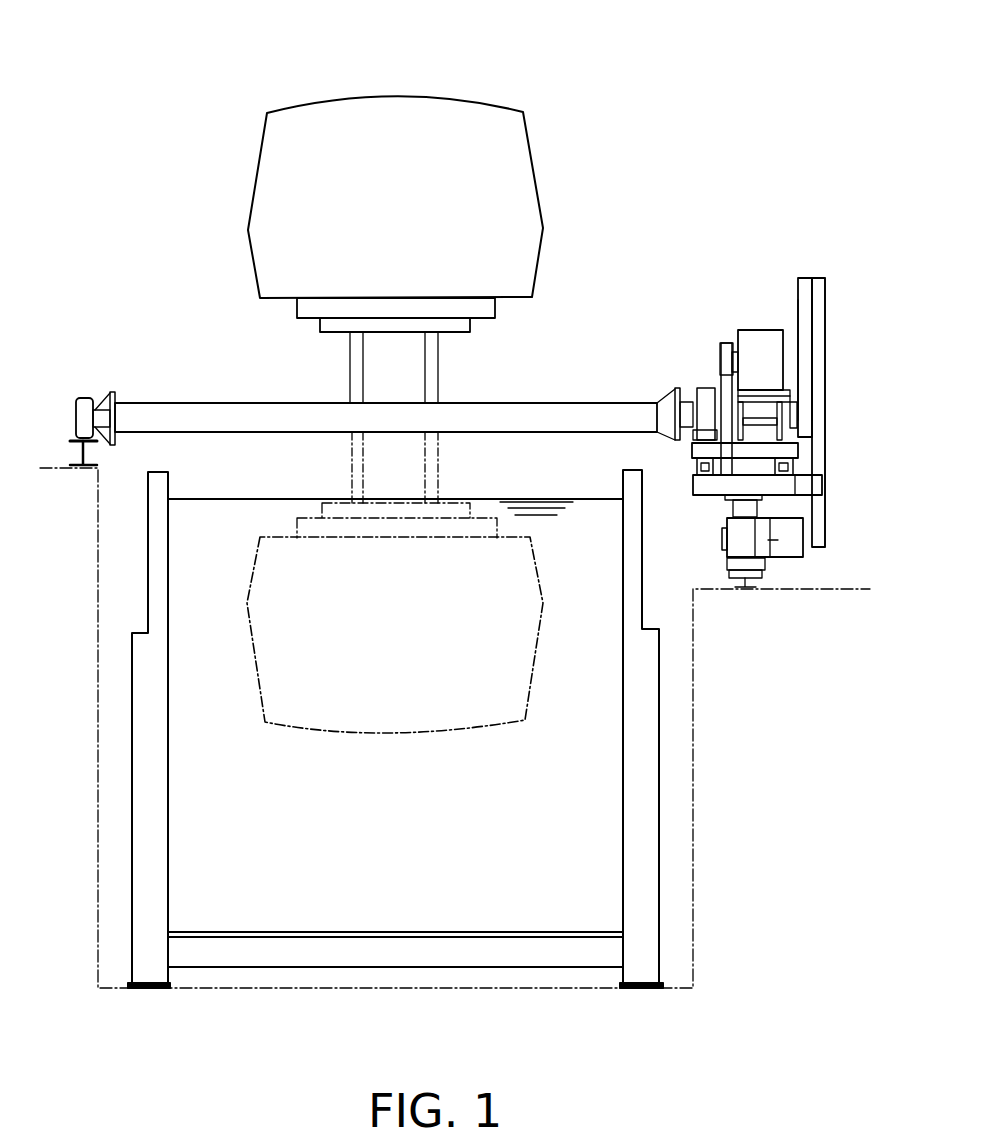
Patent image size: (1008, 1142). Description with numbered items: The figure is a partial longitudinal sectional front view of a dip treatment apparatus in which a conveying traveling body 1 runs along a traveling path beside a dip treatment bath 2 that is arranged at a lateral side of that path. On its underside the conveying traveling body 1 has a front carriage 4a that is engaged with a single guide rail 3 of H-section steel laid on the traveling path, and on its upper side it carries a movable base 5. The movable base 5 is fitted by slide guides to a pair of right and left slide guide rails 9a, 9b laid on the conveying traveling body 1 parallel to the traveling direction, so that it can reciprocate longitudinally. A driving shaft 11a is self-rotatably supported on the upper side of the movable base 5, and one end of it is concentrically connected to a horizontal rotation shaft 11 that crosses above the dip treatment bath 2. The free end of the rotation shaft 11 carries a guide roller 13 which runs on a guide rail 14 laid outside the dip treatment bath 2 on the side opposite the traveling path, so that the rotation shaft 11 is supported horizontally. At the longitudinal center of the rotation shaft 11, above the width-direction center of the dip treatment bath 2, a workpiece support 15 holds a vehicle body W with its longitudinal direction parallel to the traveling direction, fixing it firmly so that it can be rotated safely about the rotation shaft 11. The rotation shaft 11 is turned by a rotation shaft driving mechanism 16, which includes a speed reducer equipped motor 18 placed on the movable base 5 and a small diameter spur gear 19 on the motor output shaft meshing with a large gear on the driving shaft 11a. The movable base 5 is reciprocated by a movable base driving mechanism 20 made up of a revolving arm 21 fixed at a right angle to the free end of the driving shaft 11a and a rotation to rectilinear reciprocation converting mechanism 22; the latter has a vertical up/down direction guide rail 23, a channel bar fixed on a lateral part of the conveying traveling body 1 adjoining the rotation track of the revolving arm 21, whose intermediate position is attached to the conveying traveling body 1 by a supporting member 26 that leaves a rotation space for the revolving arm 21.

The vehicle body W is at (400, 113).
The conveying traveling body 1 is at (690, 497).
The dip treatment bath 2 is at (414, 813).
The guide rail 3 is at (760, 588).
The front carriage 4a is at (720, 542).
The movable base 5 is at (792, 450).
The slide guide rail 9a is at (690, 472).
The slide guide rail 9b is at (795, 467).
The rotation shaft 11 is at (248, 412).
The driving shaft 11a is at (687, 412).
The guide roller 13 is at (83, 410).
The guide rail 14 is at (78, 452).
The workpiece support 15 is at (391, 296).
The rotation shaft driving mechanism 16 is at (725, 328).
The speed reducer equipped motor 18 is at (760, 343).
The small diameter spur gear 19 is at (722, 363).
The movable base driving mechanism 20 is at (807, 273).
The revolving arm 21 is at (805, 336).
The rotation to rectilinear reciprocation converting mechanism 22 is at (825, 290).
The guide rail 23 is at (818, 372).
The supporting member 26 is at (807, 487).